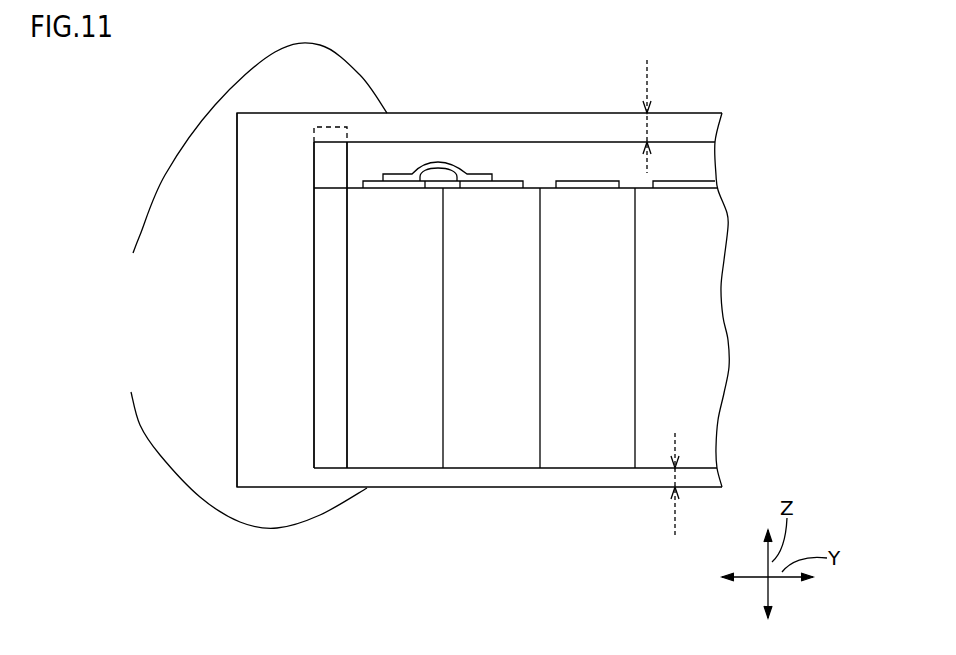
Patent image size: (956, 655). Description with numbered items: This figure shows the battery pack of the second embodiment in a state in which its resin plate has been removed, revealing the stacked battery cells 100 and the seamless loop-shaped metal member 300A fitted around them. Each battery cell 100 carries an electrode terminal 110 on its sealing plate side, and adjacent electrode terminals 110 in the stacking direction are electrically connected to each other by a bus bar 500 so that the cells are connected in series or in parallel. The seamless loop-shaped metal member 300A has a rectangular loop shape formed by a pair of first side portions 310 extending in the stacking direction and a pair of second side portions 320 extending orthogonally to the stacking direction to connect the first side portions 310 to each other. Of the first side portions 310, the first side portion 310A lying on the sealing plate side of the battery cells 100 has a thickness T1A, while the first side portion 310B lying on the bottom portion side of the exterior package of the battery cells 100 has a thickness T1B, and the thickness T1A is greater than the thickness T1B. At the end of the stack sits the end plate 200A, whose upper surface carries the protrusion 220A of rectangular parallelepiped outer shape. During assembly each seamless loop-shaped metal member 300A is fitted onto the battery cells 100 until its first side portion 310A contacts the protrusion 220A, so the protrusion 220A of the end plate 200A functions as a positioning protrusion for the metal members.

The battery cell 100 is at (398, 447).
The electrode terminal 110 is at (508, 180).
The bus bar 500 is at (438, 162).
The protrusion 220A is at (330, 125).
The end plate 200A is at (327, 345).
The seamless loop-shaped metal member 300A is at (700, 112).
The first side portions 310 is at (108, 253).
The first side portion 310A is at (247, 163).
The first side portion 310B is at (237, 448).
The second side portions 320 is at (237, 305).
The thickness T1A is at (626, 116).
The thickness T1B is at (655, 484).